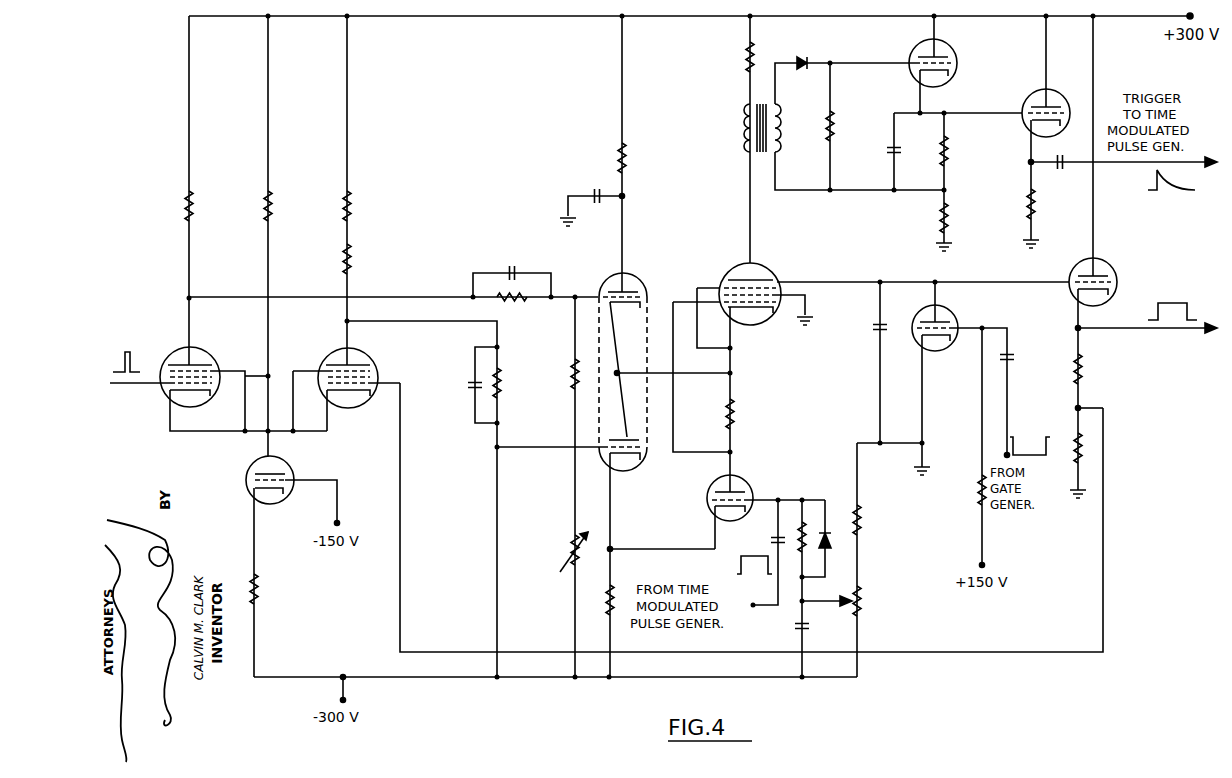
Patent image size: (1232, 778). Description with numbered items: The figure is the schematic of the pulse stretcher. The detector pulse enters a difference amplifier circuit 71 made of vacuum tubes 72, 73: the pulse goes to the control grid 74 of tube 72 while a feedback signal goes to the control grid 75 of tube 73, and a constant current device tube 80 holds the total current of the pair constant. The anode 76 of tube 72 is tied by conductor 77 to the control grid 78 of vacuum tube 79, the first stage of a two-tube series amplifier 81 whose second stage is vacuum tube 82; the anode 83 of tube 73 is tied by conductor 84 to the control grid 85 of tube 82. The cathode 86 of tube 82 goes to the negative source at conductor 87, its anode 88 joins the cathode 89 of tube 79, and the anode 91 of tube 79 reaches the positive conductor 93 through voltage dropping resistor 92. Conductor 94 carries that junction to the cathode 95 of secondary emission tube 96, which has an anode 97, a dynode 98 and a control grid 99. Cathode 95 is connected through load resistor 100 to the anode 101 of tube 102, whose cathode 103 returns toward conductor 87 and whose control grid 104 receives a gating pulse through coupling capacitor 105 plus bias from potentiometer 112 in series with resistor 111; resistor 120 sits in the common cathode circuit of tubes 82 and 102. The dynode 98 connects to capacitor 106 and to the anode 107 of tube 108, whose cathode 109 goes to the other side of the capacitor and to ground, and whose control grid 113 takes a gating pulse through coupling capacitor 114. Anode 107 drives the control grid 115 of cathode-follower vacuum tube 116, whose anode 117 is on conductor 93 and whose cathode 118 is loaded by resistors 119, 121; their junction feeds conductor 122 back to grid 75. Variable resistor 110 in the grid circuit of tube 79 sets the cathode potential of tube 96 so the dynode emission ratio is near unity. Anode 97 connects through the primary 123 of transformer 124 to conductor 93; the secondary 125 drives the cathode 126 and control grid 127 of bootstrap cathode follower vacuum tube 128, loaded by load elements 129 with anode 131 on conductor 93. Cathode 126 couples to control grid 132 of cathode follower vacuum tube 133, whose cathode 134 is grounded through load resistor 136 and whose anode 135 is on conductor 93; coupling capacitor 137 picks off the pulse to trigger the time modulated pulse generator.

The difference amplifier circuit 71 is at (282, 408).
The vacuum tube 72 is at (218, 380).
The vacuum tube 73 is at (351, 380).
The control grid 74 is at (170, 388).
The control grid 75 is at (375, 355).
The anode 76 is at (180, 362).
The conductor 77 is at (390, 297).
The control grid 78 is at (608, 296).
The vacuum tube 79 is at (626, 340).
The constant current device tube 80 is at (290, 466).
The two-tube series amplifier 81 is at (650, 346).
The vacuum tube 82 is at (650, 540).
The anode 83 is at (338, 355).
The conductor 84 is at (390, 321).
The control grid 85 is at (610, 462).
The cathode 86 is at (640, 461).
The conductor 87 is at (421, 685).
The anode 88 is at (632, 440).
The cathode 89 is at (640, 303).
The anode 91 is at (612, 288).
The voltage dropping resistor 92 is at (628, 160).
The conductor 93 is at (472, 16).
The conductor 94 is at (660, 375).
The cathode 95 is at (758, 312).
The vacuum tube of the secondary emission type 96 is at (883, 364).
The anode 97 is at (737, 273).
The dynode 98 is at (779, 282).
The control grid 99 is at (775, 300).
The load resistor 100 is at (738, 412).
The anode 101 is at (741, 504).
The tube 102 is at (712, 503).
The cathode 103 is at (716, 514).
The control grid 104 is at (752, 500).
The coupling capacitor 105 is at (771, 538).
The capacitor 106 is at (876, 326).
The anode 107 is at (947, 362).
The tube 108 is at (938, 350).
The cathode 109 is at (930, 340).
The variable resistor 110 is at (568, 545).
The resistor 111 is at (861, 510).
The potentiometer 112 is at (866, 605).
The control grid 113 is at (961, 328).
The coupling capacitor 114 is at (1010, 355).
The control grid 115 is at (1110, 289).
The vacuum tube 116 is at (1112, 280).
The anode 117 is at (1118, 274).
The cathode 118 is at (1078, 300).
The load resistor 119 is at (1085, 370).
The resistor 120 is at (614, 588).
The load resistor 121 is at (1075, 440).
The conductor 122 is at (402, 500).
The primary 123 is at (748, 135).
The transformer 124 is at (763, 115).
The secondary 125 is at (780, 115).
The cathode 126 is at (945, 82).
The control grid 127 is at (912, 70).
The vacuum tube 128 is at (942, 64).
The load elements 129 is at (950, 215).
The anode 131 is at (932, 50).
The control grid 132 is at (1026, 118).
The vacuum tube 133 is at (1046, 128).
The cathode 134 is at (1052, 128).
The anode 135 is at (1036, 92).
The load resistor 136 is at (1036, 210).
The coupling capacitor 137 is at (1060, 172).